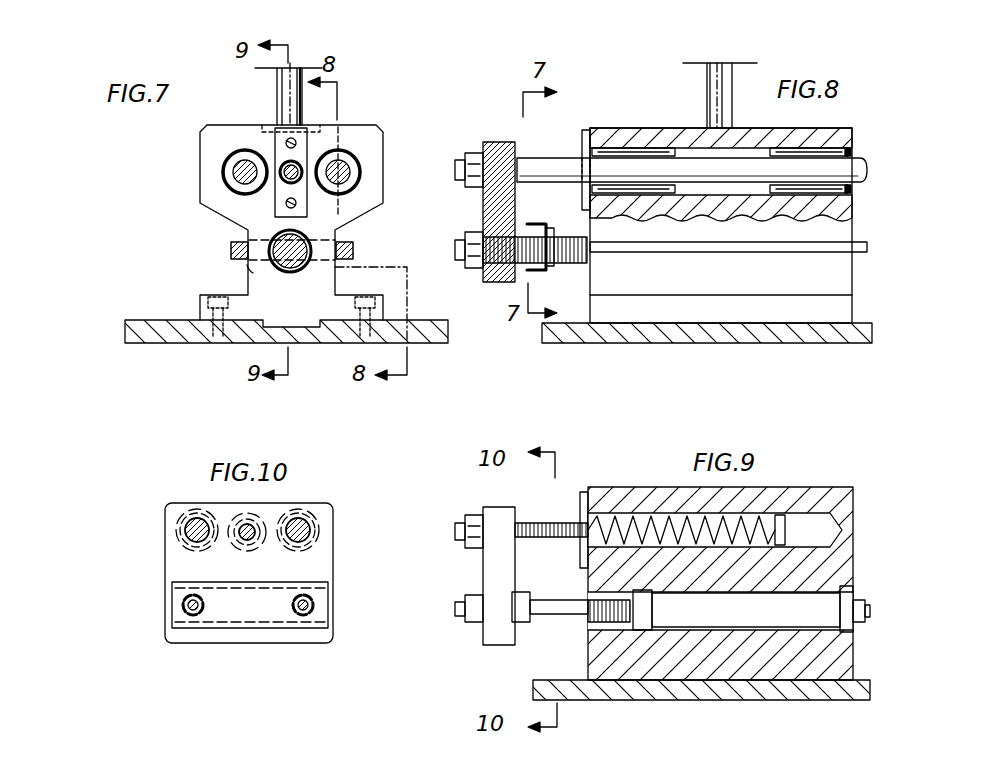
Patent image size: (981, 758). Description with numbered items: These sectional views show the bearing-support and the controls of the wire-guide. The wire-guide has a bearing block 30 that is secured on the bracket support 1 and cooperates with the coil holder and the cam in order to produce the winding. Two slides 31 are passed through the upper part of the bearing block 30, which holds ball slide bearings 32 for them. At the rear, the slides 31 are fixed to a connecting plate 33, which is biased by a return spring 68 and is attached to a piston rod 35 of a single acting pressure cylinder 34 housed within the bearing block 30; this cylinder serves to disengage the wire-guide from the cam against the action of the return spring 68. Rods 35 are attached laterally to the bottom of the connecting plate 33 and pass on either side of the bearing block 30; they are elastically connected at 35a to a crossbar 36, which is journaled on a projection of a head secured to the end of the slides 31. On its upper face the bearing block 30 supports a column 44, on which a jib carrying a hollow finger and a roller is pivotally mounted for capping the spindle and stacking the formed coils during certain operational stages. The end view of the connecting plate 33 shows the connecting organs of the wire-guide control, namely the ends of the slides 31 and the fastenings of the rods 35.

In FIG. 7, the bracket support 1 is at (150, 328).
In FIG. 8, the bracket support 1 is at (566, 325).
In FIG. 9, the bracket support 1 is at (580, 684).
In FIG. 7, the bearing block 30 is at (212, 144).
In FIG. 8, the bearing block 30 is at (671, 129).
In FIG. 9, the bearing block 30 is at (812, 492).
In FIG. 7, the slides 31 is at (232, 180).
In FIG. 8, the slides 31 is at (542, 173).
In FIG. 10, the slides 31 is at (190, 530).
In FIG. 8, the ball slide bearings 32 is at (630, 150).
In FIG. 8, the connecting plate 33 is at (494, 220).
In FIG. 9, the connecting plate 33 is at (497, 576).
In FIG. 10, the connecting plate 33 is at (178, 568).
In FIG. 7, the single acting pressure cylinder 34 is at (289, 270).
In FIG. 9, the single acting pressure cylinder 34 is at (738, 613).
In FIG. 7, the piston rod 35 is at (232, 243).
In FIG. 8, the piston rod 35 is at (642, 248).
In FIG. 8, the elastic connection 35a is at (560, 212).
In FIG. 7, the crossbar 36 is at (246, 265).
In FIG. 7, the column 44 is at (283, 106).
In FIG. 8, the column 44 is at (731, 107).
In FIG. 9, the return spring 68 is at (628, 518).